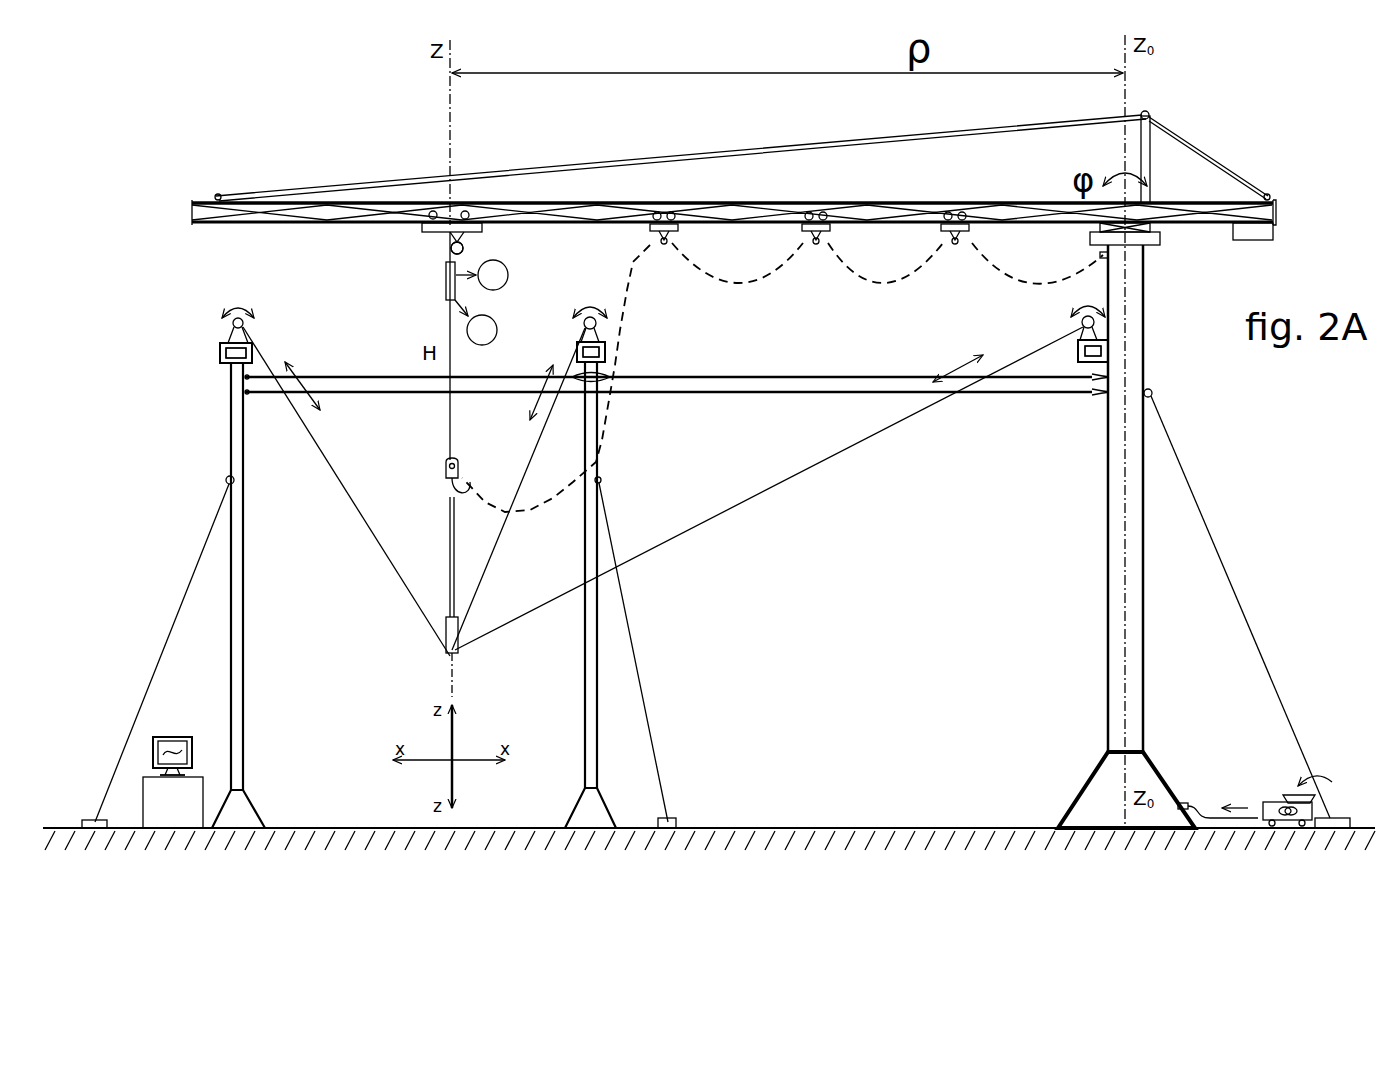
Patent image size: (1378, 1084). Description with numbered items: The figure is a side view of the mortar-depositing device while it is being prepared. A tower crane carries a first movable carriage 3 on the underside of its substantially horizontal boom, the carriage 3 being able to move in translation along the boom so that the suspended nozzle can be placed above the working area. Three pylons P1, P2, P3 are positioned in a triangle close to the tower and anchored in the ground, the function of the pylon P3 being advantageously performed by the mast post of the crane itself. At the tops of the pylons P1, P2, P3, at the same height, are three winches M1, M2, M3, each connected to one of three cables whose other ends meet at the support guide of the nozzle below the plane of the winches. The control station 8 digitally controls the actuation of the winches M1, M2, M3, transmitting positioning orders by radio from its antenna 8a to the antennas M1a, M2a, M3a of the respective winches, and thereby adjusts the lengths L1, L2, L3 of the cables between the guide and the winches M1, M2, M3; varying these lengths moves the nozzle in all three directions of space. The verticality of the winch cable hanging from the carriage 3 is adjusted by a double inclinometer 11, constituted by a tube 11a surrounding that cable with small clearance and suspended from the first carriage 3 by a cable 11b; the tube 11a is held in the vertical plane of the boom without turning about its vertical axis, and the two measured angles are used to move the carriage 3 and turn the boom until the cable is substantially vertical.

The first movable carriage 3 is at (412, 243).
The double inclinometer 11 is at (437, 308).
The tube 11a is at (440, 288).
The cable 11b is at (440, 252).
The control station 8 is at (167, 740).
The antenna 8a is at (135, 772).
The winch M1 is at (218, 345).
The antenna M1a is at (203, 359).
The winch M2 is at (585, 330).
The antenna M2a is at (622, 352).
The winch M3 is at (1082, 318).
The antenna M3a is at (1062, 356).
The pylon P1 is at (231, 722).
The pylon P2 is at (585, 718).
The pylon P3 is at (1108, 575).
The cable length L1 is at (346, 491).
The cable length L2 is at (518, 489).
The cable length L3 is at (769, 488).